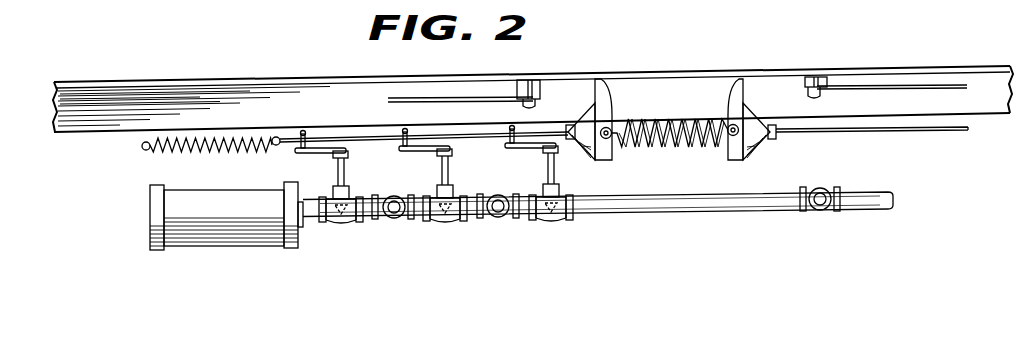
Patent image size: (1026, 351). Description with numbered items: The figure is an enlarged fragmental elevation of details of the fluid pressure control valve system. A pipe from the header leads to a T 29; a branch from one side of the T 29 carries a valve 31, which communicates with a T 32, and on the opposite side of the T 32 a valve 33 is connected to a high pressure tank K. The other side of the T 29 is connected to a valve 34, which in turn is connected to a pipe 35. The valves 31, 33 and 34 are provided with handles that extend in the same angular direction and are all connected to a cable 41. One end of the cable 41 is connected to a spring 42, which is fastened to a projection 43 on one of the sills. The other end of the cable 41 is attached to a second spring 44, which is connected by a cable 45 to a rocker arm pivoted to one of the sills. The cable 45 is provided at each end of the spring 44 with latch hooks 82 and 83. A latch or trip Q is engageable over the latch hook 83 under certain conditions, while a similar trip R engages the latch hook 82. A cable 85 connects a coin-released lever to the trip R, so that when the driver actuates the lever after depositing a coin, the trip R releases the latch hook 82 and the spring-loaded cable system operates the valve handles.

The cable 85 is at (407, 98).
The trip R is at (611, 97).
The trip Q is at (729, 90).
The latch hook 82 is at (583, 150).
The latch hook 83 is at (760, 145).
The second spring 44 is at (690, 150).
The cable 45 is at (962, 131).
The projection 43 is at (142, 148).
The spring 42 is at (236, 153).
The cable 41 is at (492, 143).
The pipe 35 is at (638, 218).
The T 32 is at (409, 182).
The T 29 is at (505, 221).
The valve 33 is at (340, 224).
The valve 31 is at (448, 223).
The valve 34 is at (562, 223).
The high pressure tank K is at (222, 240).